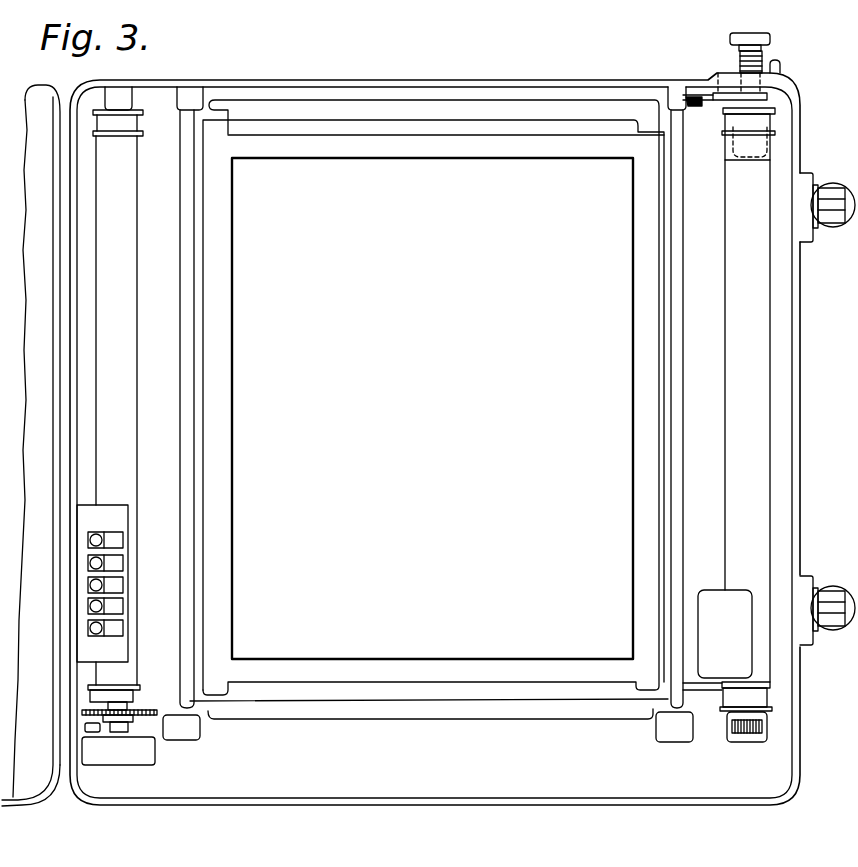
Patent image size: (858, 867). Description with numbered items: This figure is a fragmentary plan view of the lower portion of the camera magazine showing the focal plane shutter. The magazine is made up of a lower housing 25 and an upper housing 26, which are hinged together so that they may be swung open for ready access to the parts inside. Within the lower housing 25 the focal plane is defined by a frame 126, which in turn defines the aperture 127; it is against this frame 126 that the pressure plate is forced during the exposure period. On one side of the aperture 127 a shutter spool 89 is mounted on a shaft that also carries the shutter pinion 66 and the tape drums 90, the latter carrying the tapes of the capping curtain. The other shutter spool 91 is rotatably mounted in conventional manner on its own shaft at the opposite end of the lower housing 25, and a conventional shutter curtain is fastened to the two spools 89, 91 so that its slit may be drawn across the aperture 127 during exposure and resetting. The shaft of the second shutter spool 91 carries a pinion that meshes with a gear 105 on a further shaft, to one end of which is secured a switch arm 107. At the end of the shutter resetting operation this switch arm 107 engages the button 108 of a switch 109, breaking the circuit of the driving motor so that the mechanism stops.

The lower housing 25 is at (153, 82).
The upper housing 26 is at (34, 84).
The shutter spool 89 is at (765, 407).
The tape drums 90 is at (770, 115).
The shutter spool 91 is at (122, 312).
The gear 105 is at (150, 702).
The switch arm 107 is at (94, 758).
The button 108 is at (152, 738).
The switch 109 is at (138, 766).
The frame 126 is at (218, 584).
The aperture 127 is at (245, 479).
The shutter pinion 66 is at (747, 735).